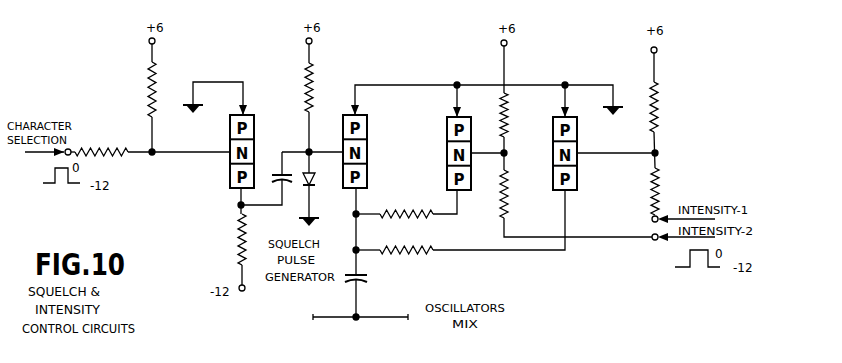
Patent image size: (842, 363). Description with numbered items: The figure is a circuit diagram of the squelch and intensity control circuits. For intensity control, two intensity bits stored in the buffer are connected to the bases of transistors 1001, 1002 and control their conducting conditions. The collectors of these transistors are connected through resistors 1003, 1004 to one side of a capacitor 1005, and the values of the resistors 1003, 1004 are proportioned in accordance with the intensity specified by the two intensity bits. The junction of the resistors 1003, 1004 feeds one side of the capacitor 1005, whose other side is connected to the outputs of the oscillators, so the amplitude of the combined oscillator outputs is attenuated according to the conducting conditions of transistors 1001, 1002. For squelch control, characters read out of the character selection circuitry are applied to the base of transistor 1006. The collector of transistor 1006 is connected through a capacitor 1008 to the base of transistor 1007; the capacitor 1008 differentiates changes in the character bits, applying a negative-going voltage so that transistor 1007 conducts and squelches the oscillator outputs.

The transistor 1001 is at (578, 180).
The transistor 1002 is at (447, 148).
The resistor 1003 is at (427, 211).
The resistor 1004 is at (410, 252).
The capacitor 1005 is at (362, 283).
The transistor 1006 is at (254, 130).
The transistor 1007 is at (343, 122).
The capacitor 1008 is at (270, 176).